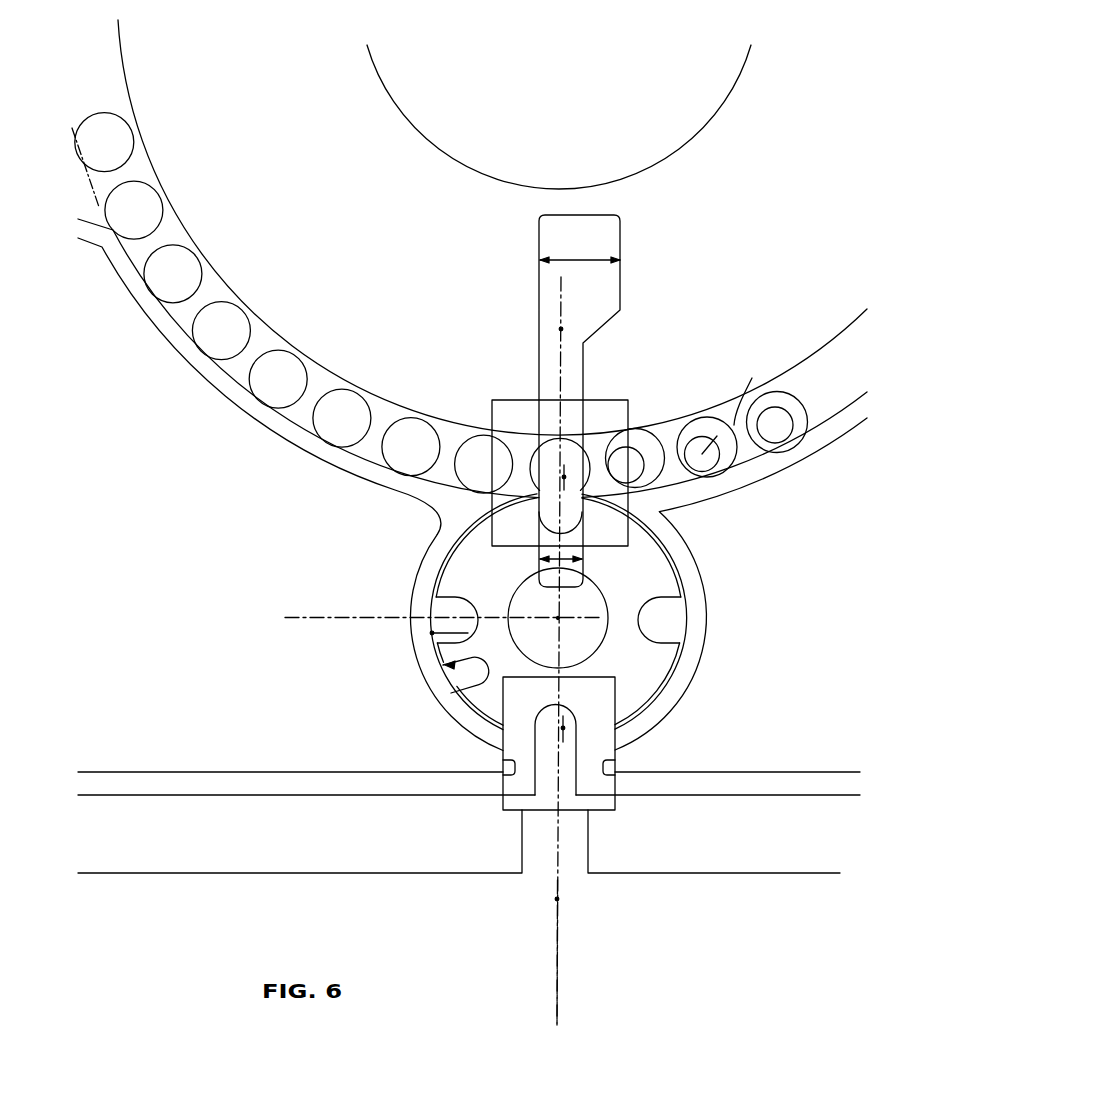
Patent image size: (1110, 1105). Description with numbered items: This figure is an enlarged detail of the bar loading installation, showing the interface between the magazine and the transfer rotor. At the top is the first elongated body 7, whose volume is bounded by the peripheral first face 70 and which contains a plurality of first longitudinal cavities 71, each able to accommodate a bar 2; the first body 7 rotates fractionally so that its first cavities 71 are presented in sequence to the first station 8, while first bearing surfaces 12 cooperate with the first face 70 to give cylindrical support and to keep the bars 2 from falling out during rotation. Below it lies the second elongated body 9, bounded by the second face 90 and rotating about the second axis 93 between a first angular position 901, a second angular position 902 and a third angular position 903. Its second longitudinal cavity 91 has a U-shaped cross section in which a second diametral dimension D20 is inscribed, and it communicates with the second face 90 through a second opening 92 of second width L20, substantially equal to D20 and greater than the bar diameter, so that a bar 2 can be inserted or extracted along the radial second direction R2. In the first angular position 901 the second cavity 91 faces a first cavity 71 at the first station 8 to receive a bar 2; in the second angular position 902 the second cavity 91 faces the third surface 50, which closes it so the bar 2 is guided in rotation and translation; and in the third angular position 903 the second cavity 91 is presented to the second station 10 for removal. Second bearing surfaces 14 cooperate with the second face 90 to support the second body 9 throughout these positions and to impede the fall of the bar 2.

The first elongated body 7 is at (476, 274).
The first face 70 is at (73, 145).
The first longitudinal cavities 71 is at (580, 456).
The first bearing surfaces 12 is at (320, 421).
The bar 2 is at (628, 464).
The first station 8 is at (630, 410).
The second opening 92 is at (578, 215).
The first angular position 901 is at (561, 329).
The second width L20 is at (583, 260).
The second diametral dimension D20 is at (563, 560).
The second direction R2 is at (564, 477).
The second face 90 is at (659, 699).
The second elongated body 9 is at (493, 602).
The second axis 93 is at (558, 618).
The second longitudinal cavity 91 is at (668, 619).
The second angular position 902 is at (370, 617).
The third surface 50 is at (440, 648).
The second bearing surfaces 14 is at (460, 690).
The second station 10 is at (494, 759).
The third angular position 903 is at (559, 899).